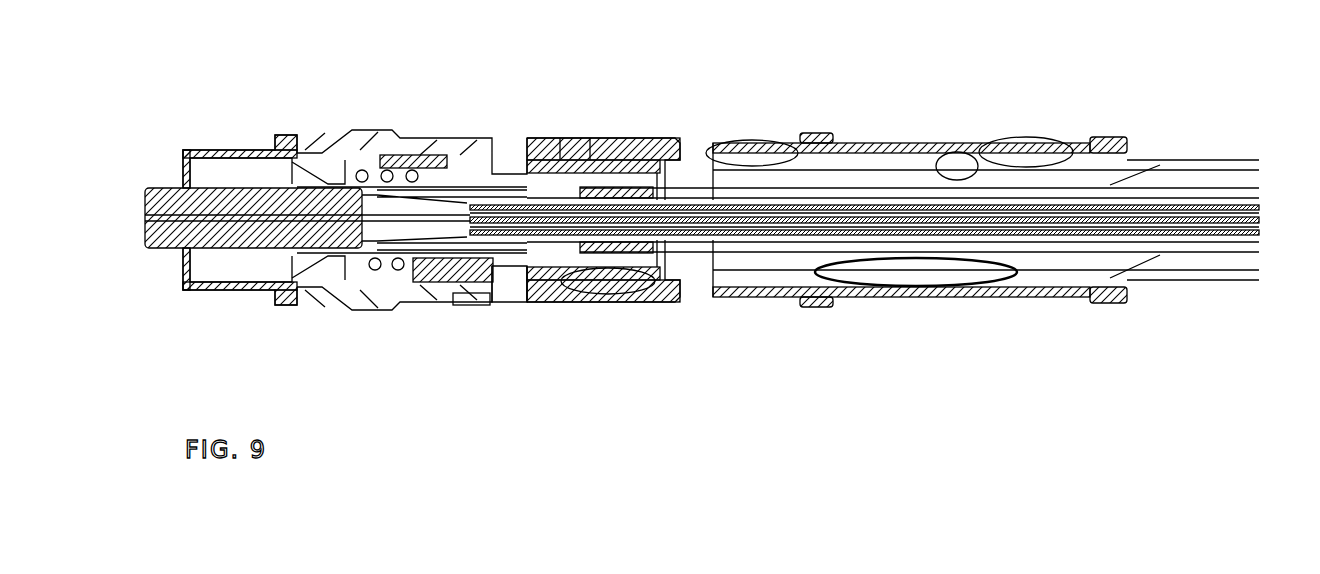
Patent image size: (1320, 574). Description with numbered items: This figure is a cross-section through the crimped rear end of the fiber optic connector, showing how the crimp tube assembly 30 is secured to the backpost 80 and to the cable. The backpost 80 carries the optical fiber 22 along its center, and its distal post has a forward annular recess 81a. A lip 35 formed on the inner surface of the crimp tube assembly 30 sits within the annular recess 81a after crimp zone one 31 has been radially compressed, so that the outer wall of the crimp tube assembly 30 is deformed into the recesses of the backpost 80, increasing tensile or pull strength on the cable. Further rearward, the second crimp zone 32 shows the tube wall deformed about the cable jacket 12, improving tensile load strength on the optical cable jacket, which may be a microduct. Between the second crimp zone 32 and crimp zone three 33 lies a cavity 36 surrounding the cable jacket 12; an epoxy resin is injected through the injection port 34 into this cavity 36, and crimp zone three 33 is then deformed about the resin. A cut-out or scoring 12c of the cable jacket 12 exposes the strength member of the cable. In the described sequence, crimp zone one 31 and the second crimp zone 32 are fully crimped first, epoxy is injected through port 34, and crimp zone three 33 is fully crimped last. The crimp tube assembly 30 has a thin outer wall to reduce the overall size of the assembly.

The cable jacket 12 is at (1155, 157).
The cut-out or scoring 12c is at (944, 153).
The optical fiber 22 is at (389, 218).
The crimp tube assembly 30 is at (637, 138).
The crimp zone one 31 is at (608, 296).
The second crimp zone 32 is at (750, 138).
The crimp zone three 33 is at (1010, 135).
The injection port 34 is at (812, 134).
The lip 35 is at (573, 132).
The cavity 36 is at (918, 288).
The backpost 80 is at (533, 270).
The forward annular recess 81a is at (546, 158).